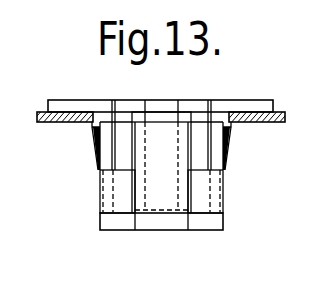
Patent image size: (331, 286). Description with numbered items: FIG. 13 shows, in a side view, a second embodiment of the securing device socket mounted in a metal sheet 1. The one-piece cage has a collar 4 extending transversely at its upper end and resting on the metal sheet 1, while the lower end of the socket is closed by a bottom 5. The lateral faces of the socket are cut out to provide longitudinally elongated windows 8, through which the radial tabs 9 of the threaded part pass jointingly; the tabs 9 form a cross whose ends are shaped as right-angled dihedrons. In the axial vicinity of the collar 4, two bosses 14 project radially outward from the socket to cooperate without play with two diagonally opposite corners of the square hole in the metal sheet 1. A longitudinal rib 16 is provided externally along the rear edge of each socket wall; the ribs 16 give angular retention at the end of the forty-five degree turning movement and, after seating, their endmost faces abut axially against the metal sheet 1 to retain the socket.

The metal sheet 1 is at (263, 110).
The collar 4 is at (227, 105).
The bottom 5 is at (123, 220).
The windows 8 is at (109, 147).
The radial tabs 9 is at (123, 193).
The bosses 14 is at (163, 110).
The longitudinal rib 16 is at (97, 134).